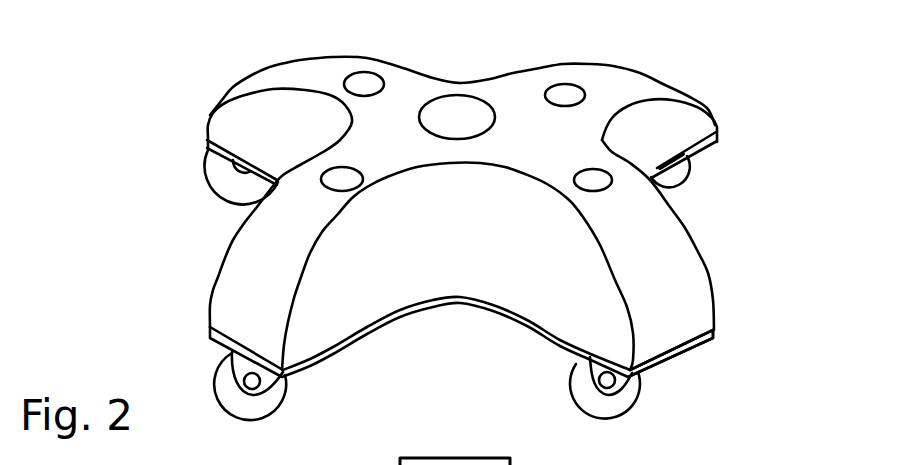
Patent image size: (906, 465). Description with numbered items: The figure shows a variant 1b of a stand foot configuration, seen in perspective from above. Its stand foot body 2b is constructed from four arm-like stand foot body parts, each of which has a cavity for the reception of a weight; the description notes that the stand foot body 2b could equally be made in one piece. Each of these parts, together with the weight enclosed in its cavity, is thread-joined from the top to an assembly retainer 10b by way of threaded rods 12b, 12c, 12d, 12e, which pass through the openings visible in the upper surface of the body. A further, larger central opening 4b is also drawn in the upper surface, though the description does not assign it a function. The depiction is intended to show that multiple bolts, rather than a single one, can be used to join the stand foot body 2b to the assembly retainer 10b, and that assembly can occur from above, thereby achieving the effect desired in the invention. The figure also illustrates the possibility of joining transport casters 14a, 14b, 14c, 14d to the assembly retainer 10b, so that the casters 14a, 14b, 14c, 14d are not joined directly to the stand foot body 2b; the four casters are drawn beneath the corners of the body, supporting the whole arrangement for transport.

The variant 1b is at (760, 150).
The stand foot body 2b is at (688, 264).
The central hole 4b is at (458, 118).
The assembly retainer 10b is at (717, 338).
The threaded rod 12b is at (565, 97).
The threaded rod 12c is at (363, 87).
The threaded rod 12d is at (338, 183).
The threaded rod 12e is at (600, 178).
The transport caster 14a is at (640, 395).
The transport caster 14b is at (688, 183).
The transport caster 14c is at (225, 203).
The transport caster 14d is at (283, 403).